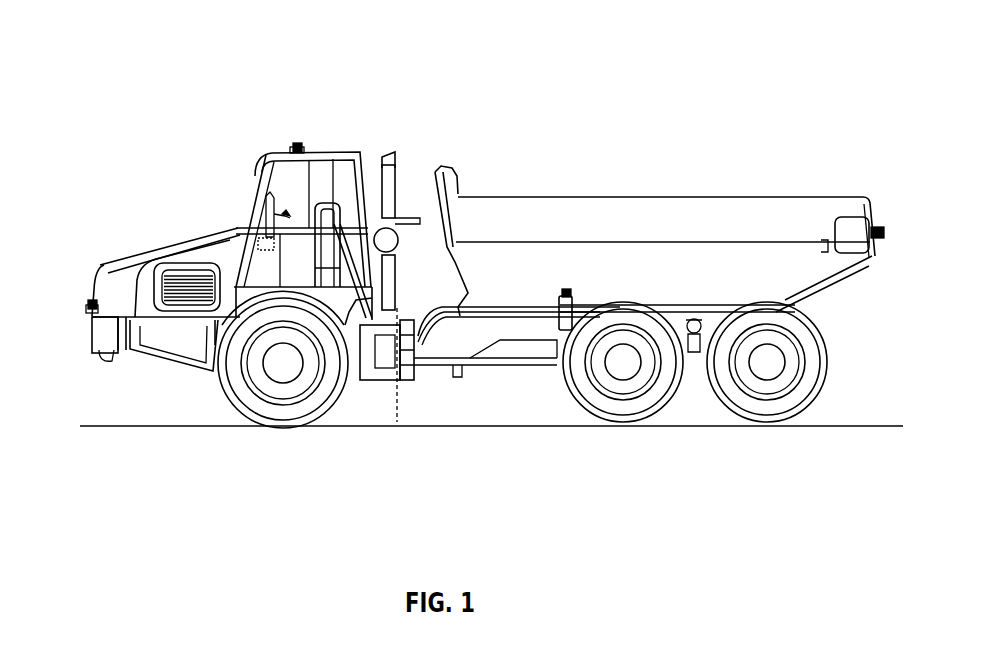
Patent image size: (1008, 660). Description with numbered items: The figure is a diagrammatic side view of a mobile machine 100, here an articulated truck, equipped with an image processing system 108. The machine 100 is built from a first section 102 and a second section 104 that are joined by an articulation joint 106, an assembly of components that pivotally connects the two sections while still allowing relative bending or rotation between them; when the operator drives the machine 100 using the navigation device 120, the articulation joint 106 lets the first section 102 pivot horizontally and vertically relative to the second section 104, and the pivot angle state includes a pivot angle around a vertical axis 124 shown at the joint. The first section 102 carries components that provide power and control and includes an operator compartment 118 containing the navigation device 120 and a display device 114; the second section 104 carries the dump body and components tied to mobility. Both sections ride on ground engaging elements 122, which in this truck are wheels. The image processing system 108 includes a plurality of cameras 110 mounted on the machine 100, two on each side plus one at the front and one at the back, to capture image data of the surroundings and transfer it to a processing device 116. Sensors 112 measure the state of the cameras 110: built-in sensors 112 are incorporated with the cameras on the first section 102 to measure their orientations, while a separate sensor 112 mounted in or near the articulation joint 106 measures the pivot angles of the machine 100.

The mobile machine 100 is at (734, 98).
The first section 102 is at (400, 108).
The second section 104 is at (885, 155).
The articulation joint 106 is at (408, 320).
The image processing system 108 is at (180, 308).
The camera 110 is at (301, 146).
The sensor 112 is at (294, 146).
The display device 114 is at (257, 212).
The processing device 116 is at (183, 235).
The operator compartment 118 is at (357, 148).
The navigation device 120 is at (253, 187).
The ground engaging element 122 is at (200, 397).
The vertical axis 124 is at (390, 394).